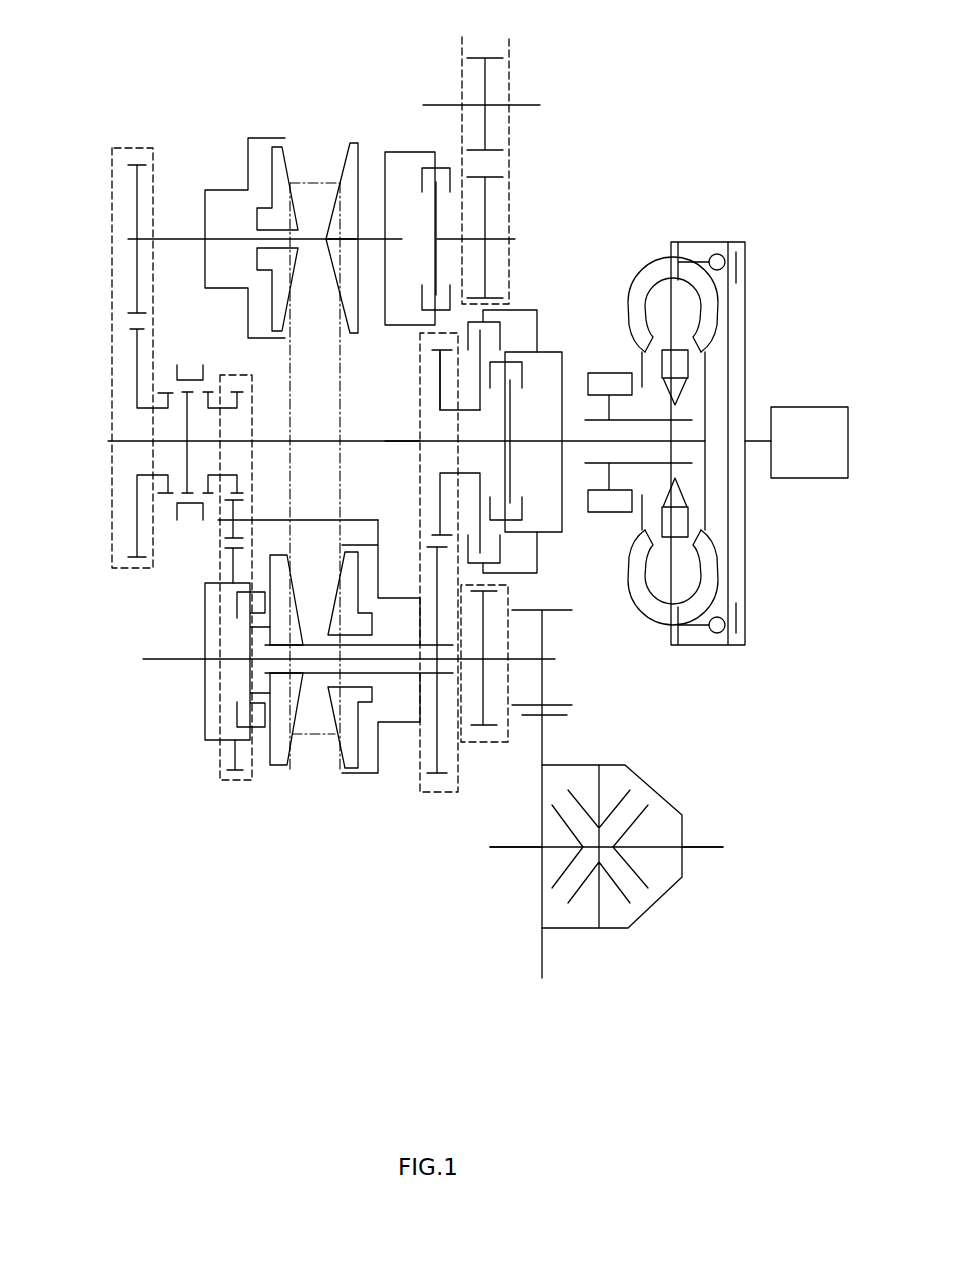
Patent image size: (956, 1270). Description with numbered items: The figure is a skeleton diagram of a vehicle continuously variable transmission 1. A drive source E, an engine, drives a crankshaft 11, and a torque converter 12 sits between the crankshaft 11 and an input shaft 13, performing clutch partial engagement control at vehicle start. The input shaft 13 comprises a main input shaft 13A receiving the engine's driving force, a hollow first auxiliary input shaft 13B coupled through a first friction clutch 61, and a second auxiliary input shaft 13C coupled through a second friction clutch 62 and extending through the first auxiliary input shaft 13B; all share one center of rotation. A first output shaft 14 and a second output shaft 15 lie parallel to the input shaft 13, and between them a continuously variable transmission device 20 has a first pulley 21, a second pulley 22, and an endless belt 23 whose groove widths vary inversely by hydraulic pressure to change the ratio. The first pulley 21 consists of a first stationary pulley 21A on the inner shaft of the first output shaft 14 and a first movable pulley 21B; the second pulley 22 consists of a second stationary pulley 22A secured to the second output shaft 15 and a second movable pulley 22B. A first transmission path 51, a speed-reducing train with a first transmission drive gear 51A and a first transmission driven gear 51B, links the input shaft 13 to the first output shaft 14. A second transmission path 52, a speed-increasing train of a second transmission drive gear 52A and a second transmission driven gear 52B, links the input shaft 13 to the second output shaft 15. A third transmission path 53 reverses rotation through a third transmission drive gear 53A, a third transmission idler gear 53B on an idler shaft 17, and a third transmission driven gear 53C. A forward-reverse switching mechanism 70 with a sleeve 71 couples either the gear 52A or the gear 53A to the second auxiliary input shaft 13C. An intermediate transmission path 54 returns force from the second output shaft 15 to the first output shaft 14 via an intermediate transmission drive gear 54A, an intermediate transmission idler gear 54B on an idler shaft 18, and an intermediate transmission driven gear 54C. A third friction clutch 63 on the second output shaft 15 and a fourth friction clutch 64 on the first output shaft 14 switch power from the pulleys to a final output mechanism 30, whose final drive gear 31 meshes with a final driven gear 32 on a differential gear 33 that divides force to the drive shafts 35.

The continuously variable transmission 1 is at (658, 122).
The crankshaft 11 is at (758, 441).
The torque converter 12 is at (685, 232).
The input shaft 13 is at (580, 425).
The main input shaft 13A is at (572, 444).
The first auxiliary input shaft 13B is at (457, 408).
The second auxiliary input shaft 13C is at (378, 440).
The first output shaft 14 is at (172, 658).
The second output shaft 15 is at (172, 239).
The idler shaft 17 is at (313, 522).
The idler shaft 18 is at (528, 105).
The continuously variable transmission device 20 is at (364, 76).
The first pulley 21 is at (375, 807).
The first stationary pulley 21A is at (290, 763).
The first movable pulley 21B is at (338, 763).
The second pulley 22 is at (368, 102).
The second stationary pulley 22A is at (347, 150).
The second movable pulley 22B is at (292, 155).
The endless belt 23 is at (342, 378).
The final output mechanism 30 is at (636, 705).
The final drive gear 31 is at (545, 680).
The final driven gear 32 is at (545, 740).
The differential gear 33 is at (668, 777).
The drive shaft 35 is at (505, 853).
The first transmission path 51 is at (428, 797).
The first transmission drive gear 51A is at (440, 492).
The first transmission driven gear 51B is at (433, 562).
The second transmission path 52 is at (127, 572).
The second transmission drive gear 52A is at (133, 350).
The second transmission driven gear 52B is at (133, 292).
The third transmission path 53 is at (222, 773).
The third transmission drive gear 53A is at (240, 483).
The third transmission idler gear 53B is at (243, 500).
The third transmission driven gear 53C is at (230, 562).
The intermediate transmission path 54 is at (515, 165).
The intermediate transmission drive gear 54A is at (487, 197).
The intermediate transmission idler gear 54B is at (487, 125).
The intermediate transmission driven gear 54C is at (485, 600).
The first friction clutch 61 is at (500, 332).
The second friction clutch 62 is at (523, 372).
The third friction clutch 63 is at (437, 168).
The fourth friction clutch 64 is at (255, 730).
The forward-reverse switching mechanism 70 is at (188, 346).
The sleeve 71 is at (207, 368).